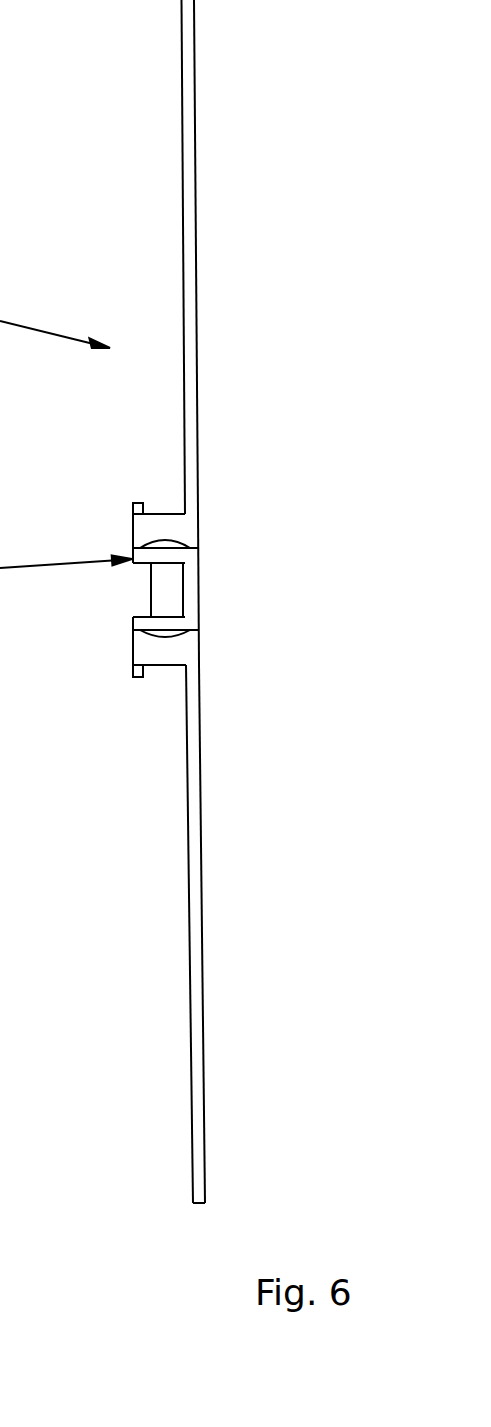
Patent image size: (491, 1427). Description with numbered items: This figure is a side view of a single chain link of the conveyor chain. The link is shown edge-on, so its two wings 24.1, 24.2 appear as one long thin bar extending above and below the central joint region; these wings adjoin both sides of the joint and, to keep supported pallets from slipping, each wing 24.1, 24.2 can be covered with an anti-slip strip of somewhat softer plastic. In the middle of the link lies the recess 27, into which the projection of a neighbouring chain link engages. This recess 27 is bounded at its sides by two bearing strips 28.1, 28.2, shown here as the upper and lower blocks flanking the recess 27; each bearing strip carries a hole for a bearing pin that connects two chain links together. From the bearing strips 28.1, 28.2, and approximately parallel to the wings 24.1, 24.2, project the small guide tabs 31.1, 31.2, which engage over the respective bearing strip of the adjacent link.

The wing 24.1 is at (195, 284).
The wing 24.2 is at (203, 1003).
The recess 27 is at (138, 602).
The bearing strip 28.1 is at (167, 532).
The bearing strip 28.2 is at (160, 645).
The guide tab 31.1 is at (133, 503).
The guide tab 31.2 is at (133, 677).